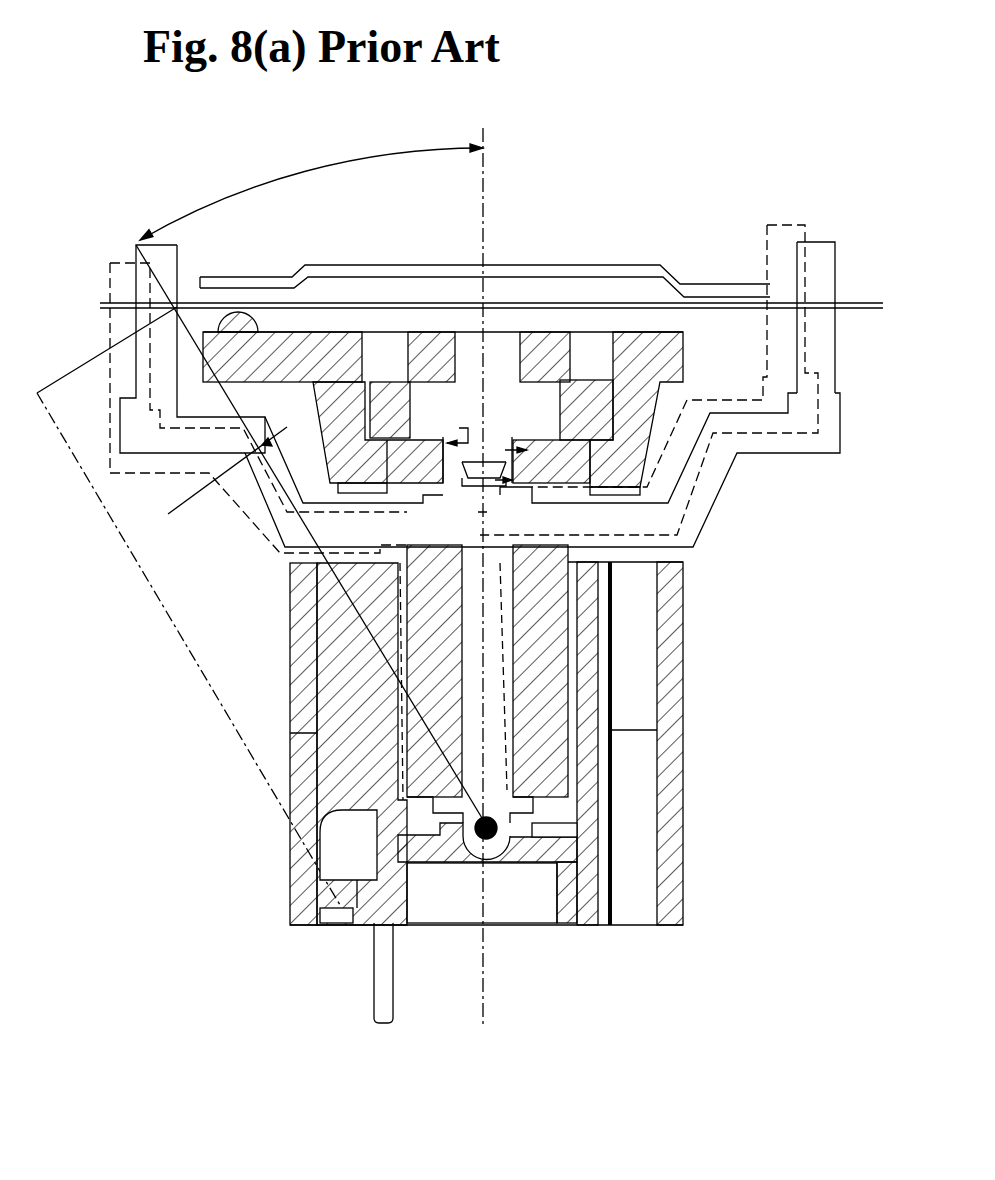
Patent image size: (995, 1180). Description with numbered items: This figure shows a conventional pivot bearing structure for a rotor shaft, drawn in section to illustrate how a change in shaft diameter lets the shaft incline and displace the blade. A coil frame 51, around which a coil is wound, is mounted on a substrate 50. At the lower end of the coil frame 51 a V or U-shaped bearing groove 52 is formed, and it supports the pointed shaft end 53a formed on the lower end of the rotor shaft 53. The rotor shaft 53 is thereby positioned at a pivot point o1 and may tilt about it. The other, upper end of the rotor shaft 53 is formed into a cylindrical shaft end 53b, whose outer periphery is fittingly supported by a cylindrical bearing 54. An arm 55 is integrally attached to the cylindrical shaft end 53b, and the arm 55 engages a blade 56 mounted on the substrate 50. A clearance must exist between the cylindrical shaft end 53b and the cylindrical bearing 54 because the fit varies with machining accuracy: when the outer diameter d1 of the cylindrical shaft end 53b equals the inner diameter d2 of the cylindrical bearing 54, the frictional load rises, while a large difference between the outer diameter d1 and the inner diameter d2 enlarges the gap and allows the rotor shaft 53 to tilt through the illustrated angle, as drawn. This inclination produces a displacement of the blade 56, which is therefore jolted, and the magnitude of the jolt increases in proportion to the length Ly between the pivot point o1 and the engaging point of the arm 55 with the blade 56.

The substrate 50 is at (623, 350).
The coil frame 51 is at (582, 873).
The bearing groove 52 is at (512, 845).
The rotor shaft 53 is at (497, 765).
The pointed shaft end 53a is at (478, 838).
The cylindrical shaft end 53b is at (482, 462).
The cylindrical bearing 54 is at (521, 440).
The arm 55 is at (710, 490).
The blade 56 is at (650, 290).
The pivot point o1 is at (495, 826).
The outer diameter of the cylindrical shaft end d1 is at (483, 501).
The inner diameter of the cylindrical bearing d2 is at (480, 433).
The length Ly is at (188, 649).